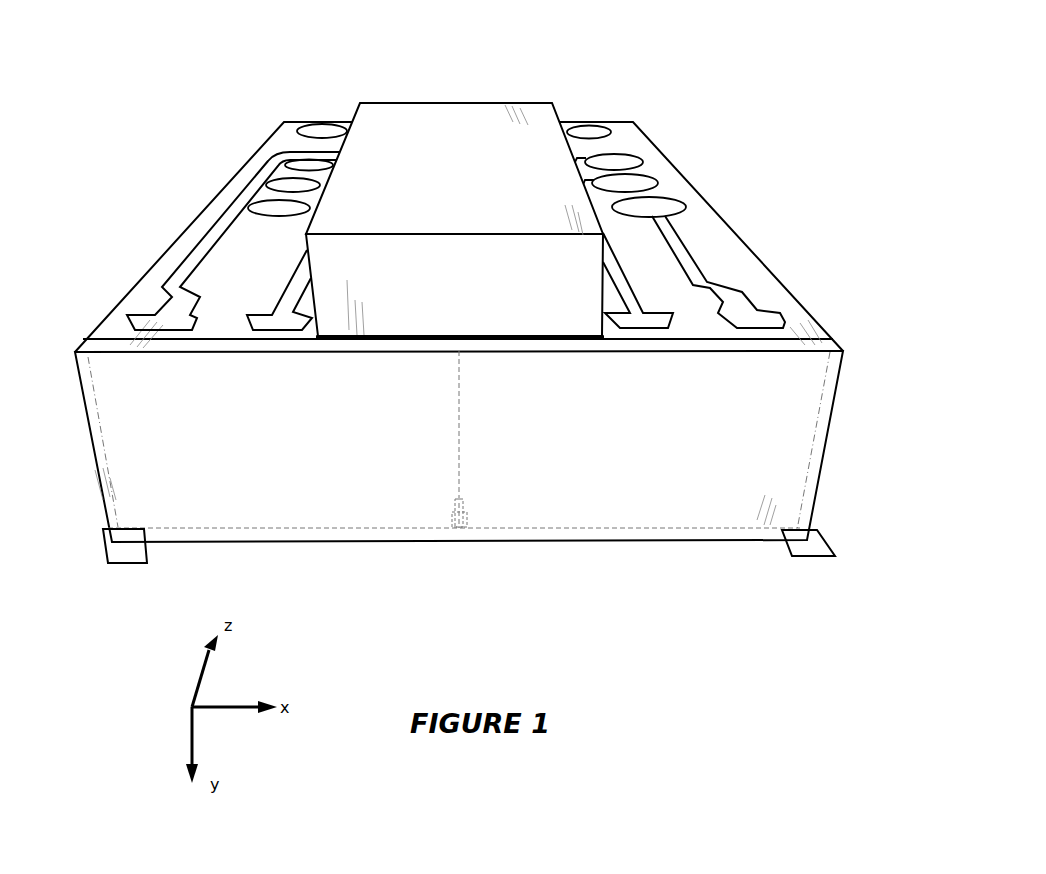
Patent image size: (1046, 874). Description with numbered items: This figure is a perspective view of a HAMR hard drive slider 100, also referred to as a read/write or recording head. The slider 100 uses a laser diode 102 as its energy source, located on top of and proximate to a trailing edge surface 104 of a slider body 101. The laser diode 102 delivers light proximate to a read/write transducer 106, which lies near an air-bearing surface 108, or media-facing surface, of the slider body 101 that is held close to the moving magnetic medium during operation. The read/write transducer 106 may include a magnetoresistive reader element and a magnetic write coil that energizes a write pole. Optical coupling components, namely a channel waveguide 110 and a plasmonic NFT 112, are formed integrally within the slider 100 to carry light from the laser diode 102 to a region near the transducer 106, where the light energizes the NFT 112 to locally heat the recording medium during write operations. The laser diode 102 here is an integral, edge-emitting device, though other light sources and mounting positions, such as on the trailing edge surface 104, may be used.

The HAMR hard drive slider 100 is at (646, 64).
The slider body 101 is at (177, 240).
The laser diode 102 is at (378, 103).
The trailing edge surface 104 is at (131, 563).
The read/write transducer 106 is at (465, 527).
The air-bearing surface 108 is at (823, 556).
The channel waveguide 110 is at (459, 422).
The plasmonic NFT 112 is at (457, 528).